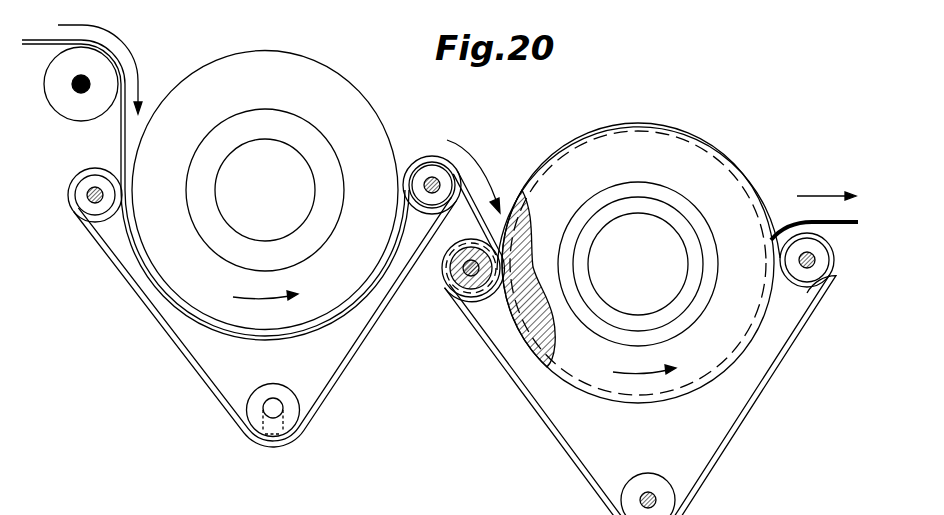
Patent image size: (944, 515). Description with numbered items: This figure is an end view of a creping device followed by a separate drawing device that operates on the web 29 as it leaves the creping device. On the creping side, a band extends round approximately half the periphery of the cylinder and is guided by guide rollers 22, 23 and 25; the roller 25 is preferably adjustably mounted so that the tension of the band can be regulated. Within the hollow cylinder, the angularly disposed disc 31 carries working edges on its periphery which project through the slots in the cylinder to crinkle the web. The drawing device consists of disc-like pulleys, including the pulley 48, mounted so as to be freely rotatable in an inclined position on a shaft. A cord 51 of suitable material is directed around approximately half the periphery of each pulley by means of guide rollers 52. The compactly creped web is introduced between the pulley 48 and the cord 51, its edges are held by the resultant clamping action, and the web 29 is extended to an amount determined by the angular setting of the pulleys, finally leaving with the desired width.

The guide roller 22 is at (85, 205).
The guide roller 23 is at (427, 172).
The guide roller 25 is at (277, 432).
The web 29 is at (120, 145).
The angularly disposed disc 31 is at (272, 58).
The disc-like pulley 48 is at (737, 186).
The cord 51 is at (552, 425).
The guide roller 52 is at (458, 280).